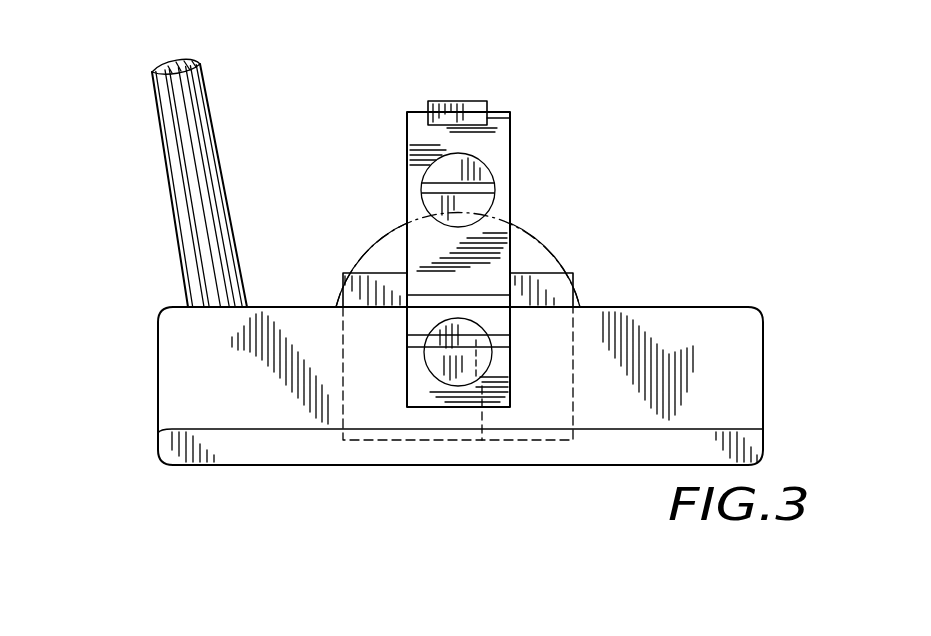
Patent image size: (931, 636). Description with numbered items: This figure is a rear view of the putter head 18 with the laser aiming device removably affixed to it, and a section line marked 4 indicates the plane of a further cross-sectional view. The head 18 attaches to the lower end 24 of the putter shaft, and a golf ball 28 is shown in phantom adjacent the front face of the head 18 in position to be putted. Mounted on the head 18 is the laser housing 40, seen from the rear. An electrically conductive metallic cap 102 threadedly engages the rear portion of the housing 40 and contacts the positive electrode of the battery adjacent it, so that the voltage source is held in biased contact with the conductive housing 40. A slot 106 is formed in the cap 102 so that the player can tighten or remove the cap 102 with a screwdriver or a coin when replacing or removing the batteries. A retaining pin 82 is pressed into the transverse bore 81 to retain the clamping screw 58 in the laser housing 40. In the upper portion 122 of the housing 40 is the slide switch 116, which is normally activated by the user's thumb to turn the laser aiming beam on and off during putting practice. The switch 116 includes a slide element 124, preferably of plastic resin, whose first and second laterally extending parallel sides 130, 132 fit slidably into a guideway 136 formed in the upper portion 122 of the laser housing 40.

The section line 4- 4 is at (130, 87).
The head 18 is at (158, 386).
The lower end of the shaft 24 is at (185, 61).
The golf ball 28 is at (358, 254).
The laser housing 40 is at (404, 106).
The clamping screw 58 is at (424, 362).
The transverse bore 81 is at (502, 338).
The retaining pin 82 is at (493, 472).
The cap 102 is at (480, 220).
The slot 106 is at (423, 182).
The slide switch 116 is at (462, 95).
The upper portion of the laser housing 122 is at (511, 124).
The slide element 124 is at (485, 99).
The first laterally extending side 130 is at (490, 103).
The second laterally extending side 132 is at (428, 104).
The guideway 136 is at (470, 128).